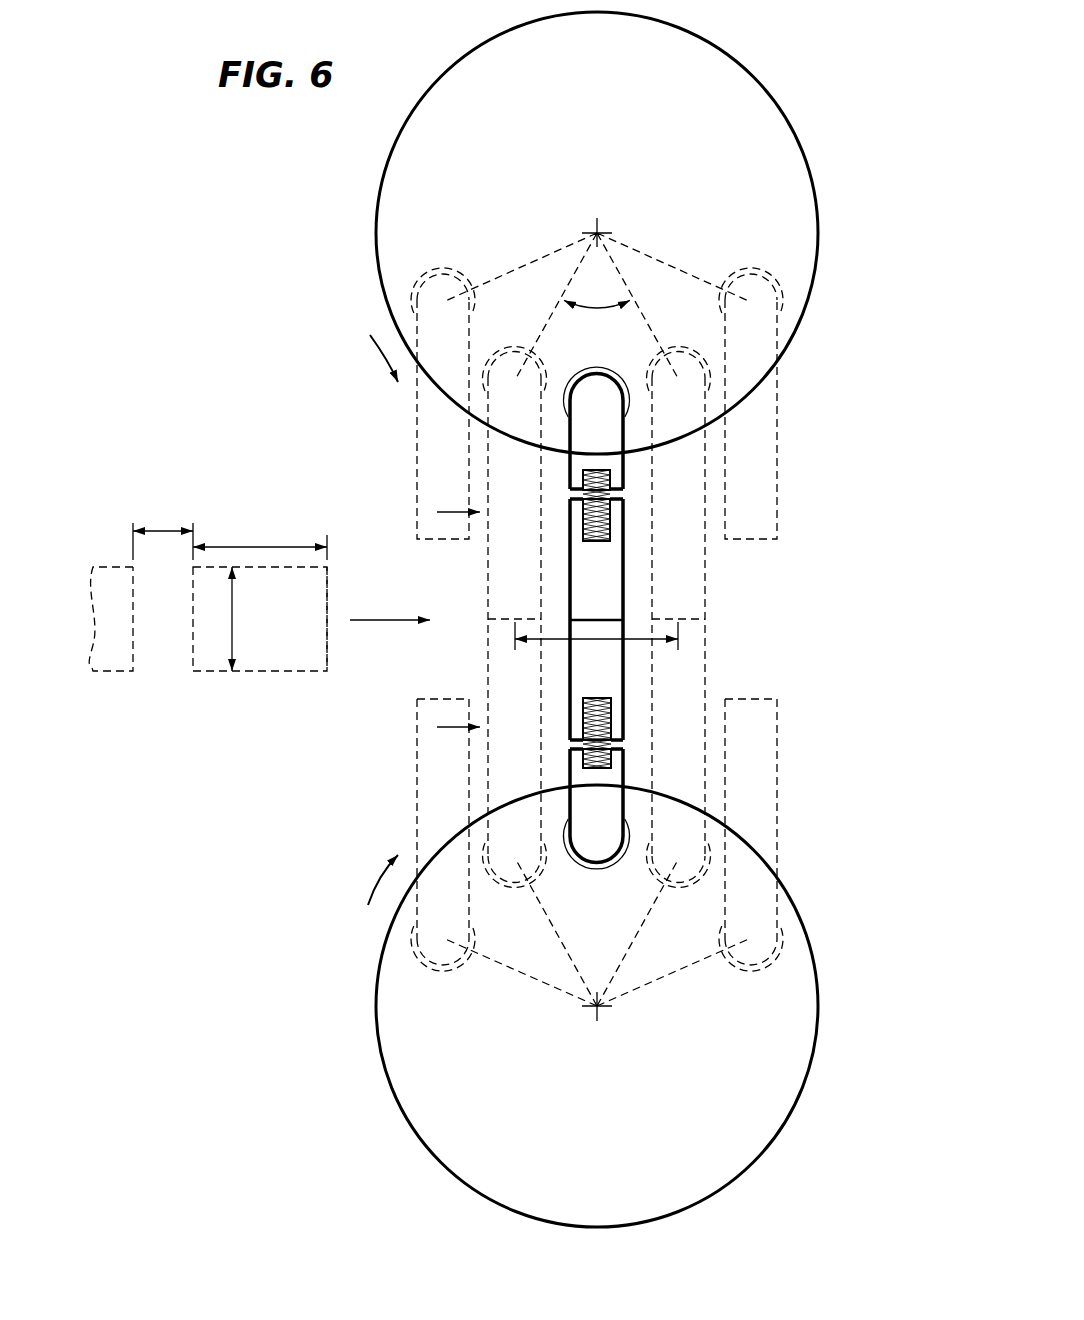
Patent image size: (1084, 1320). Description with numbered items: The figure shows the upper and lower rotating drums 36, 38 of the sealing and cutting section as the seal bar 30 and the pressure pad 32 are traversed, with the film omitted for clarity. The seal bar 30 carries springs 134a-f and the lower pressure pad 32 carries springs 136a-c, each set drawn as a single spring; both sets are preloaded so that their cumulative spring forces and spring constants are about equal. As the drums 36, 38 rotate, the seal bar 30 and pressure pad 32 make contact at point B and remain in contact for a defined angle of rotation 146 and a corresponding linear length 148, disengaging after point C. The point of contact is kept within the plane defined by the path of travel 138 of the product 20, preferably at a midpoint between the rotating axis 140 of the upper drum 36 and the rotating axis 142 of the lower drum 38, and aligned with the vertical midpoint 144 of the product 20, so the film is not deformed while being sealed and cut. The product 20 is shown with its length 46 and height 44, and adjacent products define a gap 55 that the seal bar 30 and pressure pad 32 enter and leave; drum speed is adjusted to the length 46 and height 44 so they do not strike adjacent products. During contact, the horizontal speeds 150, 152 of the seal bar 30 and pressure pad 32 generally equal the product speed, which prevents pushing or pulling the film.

The product 20 is at (275, 657).
The seal bar 30 is at (613, 590).
The pressure pad 32 is at (613, 669).
The upper rotating drum 36 is at (828, 185).
The lower rotating drum 38 is at (800, 891).
The product height 44 is at (233, 594).
The product length 46 is at (283, 546).
The gap 55 is at (162, 530).
The springs of the seal bar 134a-f is at (598, 512).
The springs of the pressure pad 136a-c is at (598, 720).
The path of travel 138 is at (376, 620).
The rotating axis of the upper rotating drum 140 is at (598, 233).
The rotating axis of the lower rotating drum 142 is at (598, 1008).
The vertical midpoint of the product 144 is at (328, 620).
The angle of rotation 146 is at (603, 300).
The linear length 148 is at (662, 634).
The horizontal speed of the seal bar 150 is at (437, 512).
The horizontal speed of the pressure pad 152 is at (437, 727).
The point B is at (513, 619).
The point C is at (678, 618).